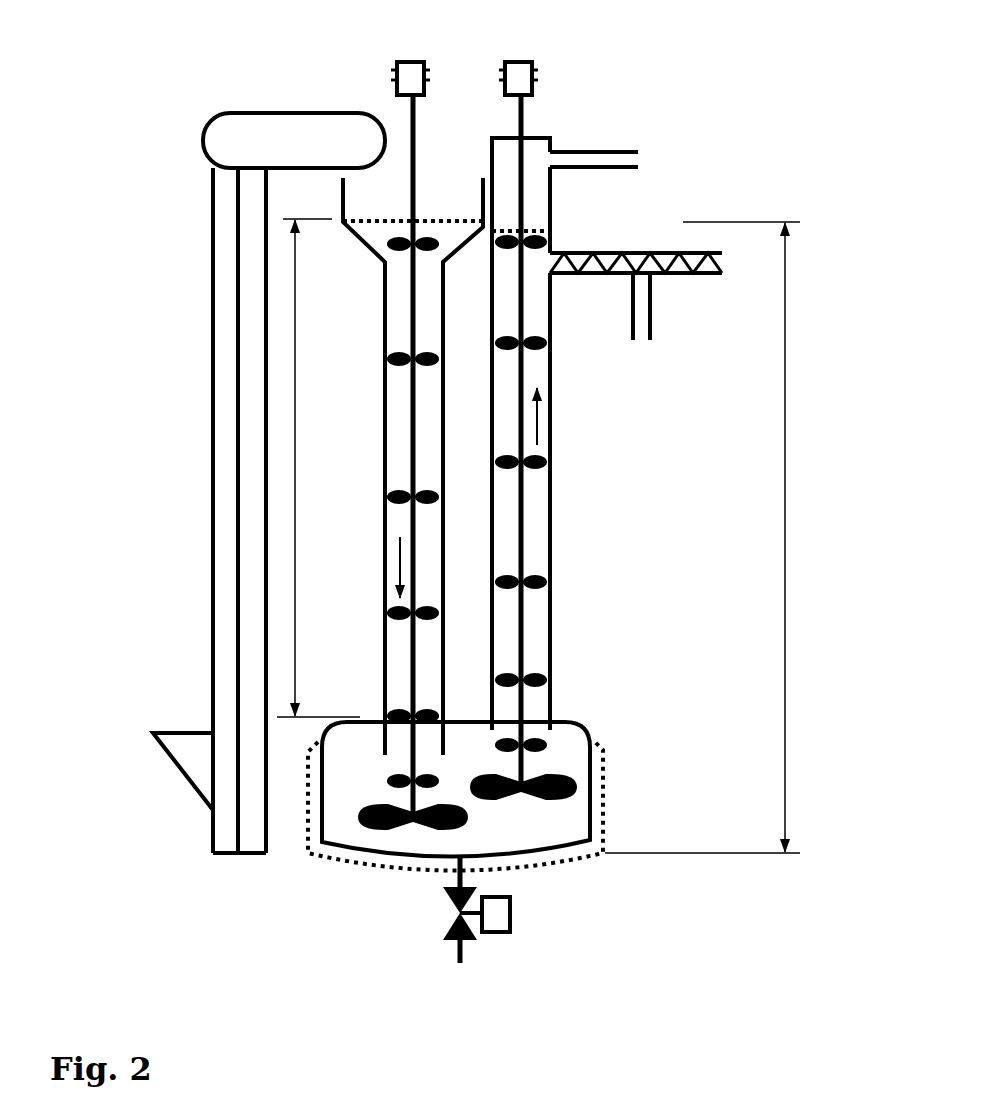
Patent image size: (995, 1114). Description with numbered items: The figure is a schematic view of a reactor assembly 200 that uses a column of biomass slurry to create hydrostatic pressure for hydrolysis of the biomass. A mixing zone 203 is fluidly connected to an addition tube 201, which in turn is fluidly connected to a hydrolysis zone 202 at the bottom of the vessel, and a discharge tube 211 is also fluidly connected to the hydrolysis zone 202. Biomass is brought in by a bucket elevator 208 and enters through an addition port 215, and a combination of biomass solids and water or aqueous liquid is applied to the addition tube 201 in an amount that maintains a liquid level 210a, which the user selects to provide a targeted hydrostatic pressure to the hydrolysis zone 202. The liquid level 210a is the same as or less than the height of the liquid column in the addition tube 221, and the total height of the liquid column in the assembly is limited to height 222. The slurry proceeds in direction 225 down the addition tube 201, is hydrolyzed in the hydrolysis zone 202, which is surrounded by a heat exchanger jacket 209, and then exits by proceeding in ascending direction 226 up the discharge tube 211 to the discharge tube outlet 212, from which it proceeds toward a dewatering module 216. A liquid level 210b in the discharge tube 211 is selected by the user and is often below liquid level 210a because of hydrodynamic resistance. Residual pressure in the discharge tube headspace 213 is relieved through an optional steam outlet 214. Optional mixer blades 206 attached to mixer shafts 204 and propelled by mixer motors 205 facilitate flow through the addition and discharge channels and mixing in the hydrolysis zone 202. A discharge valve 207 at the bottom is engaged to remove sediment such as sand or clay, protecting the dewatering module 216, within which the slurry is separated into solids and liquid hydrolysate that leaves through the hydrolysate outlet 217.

The reactor assembly 200 is at (758, 113).
The addition tube 201 is at (385, 381).
The hydrolysis zone 202 is at (343, 853).
The mixing zone 203 is at (430, 186).
The mixer shaft 204 is at (418, 665).
The mixer motors 205 is at (506, 64).
The mixer blades 206 is at (556, 774).
The discharge valve 207 is at (450, 912).
The bucket elevator 208 is at (195, 731).
The heat exchanger jacket 209 is at (608, 805).
The liquid level in addition tube 210a is at (375, 223).
The liquid level in discharge tube 210b is at (537, 226).
The discharge tube 211 is at (555, 533).
The discharge tube outlet 212 is at (562, 252).
The discharge tube headspace 213 is at (534, 172).
The steam outlet 214 is at (557, 148).
The addition port 215 is at (393, 160).
The dewatering module 216 is at (608, 277).
The hydrolysate outlet 217 is at (652, 280).
The height of liquid column in addition tube 221 is at (318, 468).
The total height of liquid column in reactor assembly 222 is at (720, 537).
The direction of flow in addition tube 225 is at (397, 568).
The direction of flow in discharge tube 226 is at (540, 430).